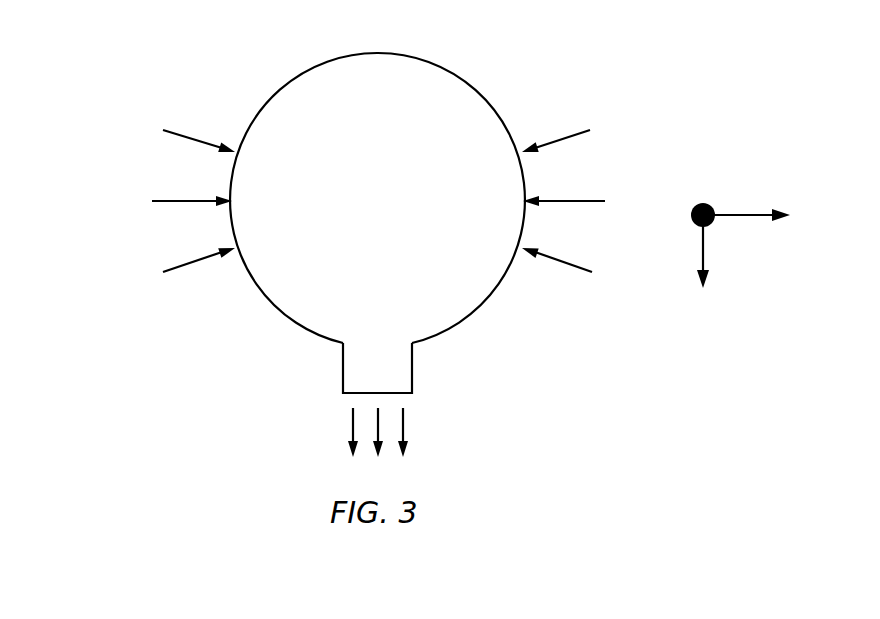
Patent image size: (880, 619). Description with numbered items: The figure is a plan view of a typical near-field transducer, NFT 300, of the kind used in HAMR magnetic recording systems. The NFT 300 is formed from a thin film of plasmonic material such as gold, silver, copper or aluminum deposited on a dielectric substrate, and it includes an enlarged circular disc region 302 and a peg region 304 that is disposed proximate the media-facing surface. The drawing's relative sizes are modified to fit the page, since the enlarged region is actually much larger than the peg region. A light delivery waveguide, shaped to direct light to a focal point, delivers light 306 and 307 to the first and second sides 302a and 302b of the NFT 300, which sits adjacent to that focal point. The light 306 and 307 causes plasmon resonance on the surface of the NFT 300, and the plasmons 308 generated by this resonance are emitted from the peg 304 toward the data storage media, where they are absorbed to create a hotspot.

The near-field transducer 300 is at (279, 22).
The enlarged circular disc region 302 is at (377, 198).
The first side 302a is at (275, 97).
The second side 302b is at (477, 92).
The peg region 304 is at (390, 367).
The light 306 is at (182, 258).
The light 307 is at (572, 138).
The plasmons 308 is at (348, 427).